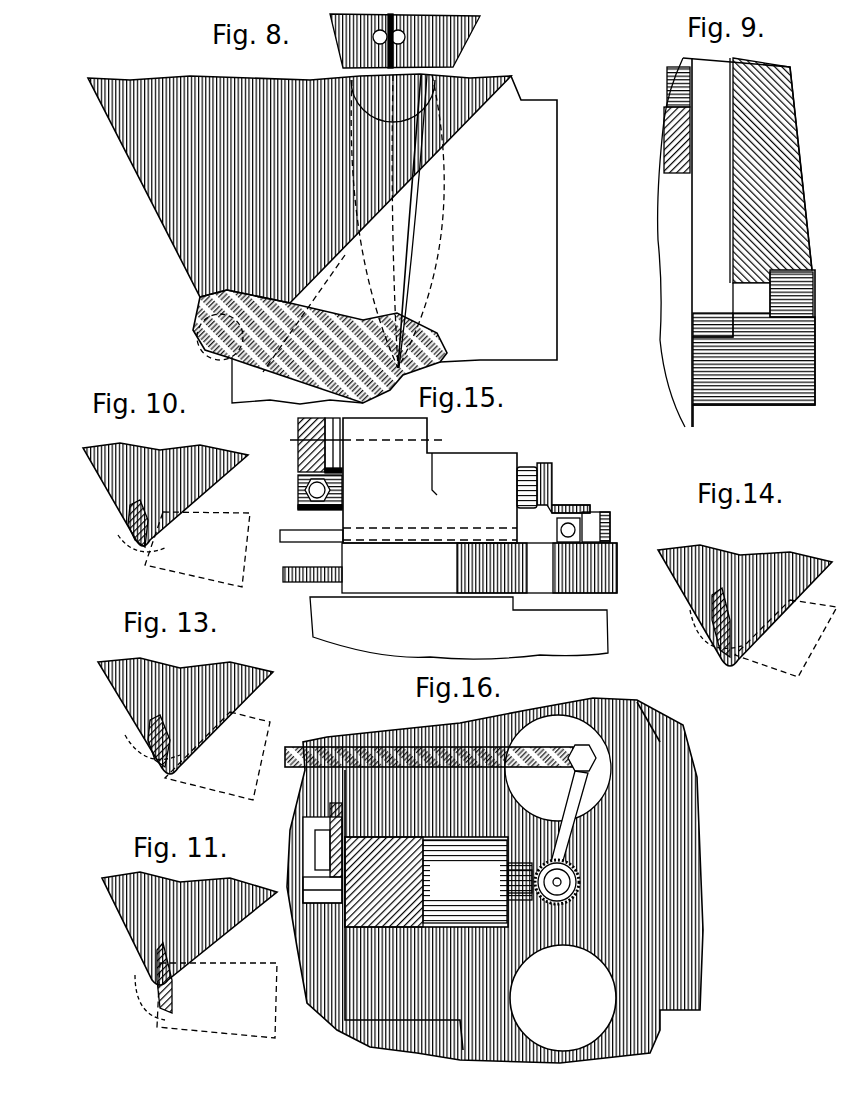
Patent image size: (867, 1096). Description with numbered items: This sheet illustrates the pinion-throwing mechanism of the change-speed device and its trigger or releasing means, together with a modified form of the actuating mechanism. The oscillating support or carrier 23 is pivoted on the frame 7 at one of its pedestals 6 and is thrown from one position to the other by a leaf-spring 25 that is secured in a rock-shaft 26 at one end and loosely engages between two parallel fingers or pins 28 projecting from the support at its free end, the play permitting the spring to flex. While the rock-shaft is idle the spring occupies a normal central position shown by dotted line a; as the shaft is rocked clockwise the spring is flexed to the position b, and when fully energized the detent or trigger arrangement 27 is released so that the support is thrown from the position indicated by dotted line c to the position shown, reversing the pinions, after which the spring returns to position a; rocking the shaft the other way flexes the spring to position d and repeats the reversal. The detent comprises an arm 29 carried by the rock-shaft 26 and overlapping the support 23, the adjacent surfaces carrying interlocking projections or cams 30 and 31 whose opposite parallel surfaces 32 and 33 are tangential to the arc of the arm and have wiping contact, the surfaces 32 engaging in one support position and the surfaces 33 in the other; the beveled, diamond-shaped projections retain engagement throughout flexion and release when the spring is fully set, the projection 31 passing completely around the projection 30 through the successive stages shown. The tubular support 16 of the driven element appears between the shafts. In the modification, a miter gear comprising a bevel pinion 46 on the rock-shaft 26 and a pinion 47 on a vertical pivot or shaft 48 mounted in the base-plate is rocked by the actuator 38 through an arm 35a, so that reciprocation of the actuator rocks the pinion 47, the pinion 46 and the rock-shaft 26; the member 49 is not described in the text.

In FIG. 15, the pedestal 6 is at (430, 480).
In FIG. 16, the pedestal 6 is at (438, 882).
In FIG. 15, the frame 7 is at (463, 601).
In FIG. 16, the frame 7 is at (693, 877).
In FIG. 15, the tubular support 16 is at (363, 442).
In FIG. 8, the oscillating support 23 is at (512, 76).
In FIG. 9, the oscillating support 23 is at (705, 268).
In FIG. 10, the oscillating support 23 is at (205, 470).
In FIG. 13, the oscillating support 23 is at (245, 688).
In FIG. 11, the oscillating support 23 is at (207, 895).
In FIG. 15, the oscillating support 23 is at (343, 458).
In FIG. 14, the oscillating support 23 is at (738, 567).
In FIG. 16, the oscillating support 23 is at (330, 810).
In FIG. 8, the leaf-spring 25 is at (428, 200).
In FIG. 15, the leaf-spring 25 is at (298, 424).
In FIG. 16, the leaf-spring 25 is at (304, 900).
In FIG. 15, the rock-shaft 26 is at (530, 467).
In FIG. 16, the rock-shaft 26 is at (530, 900).
In FIG. 10, the detent or trigger arrangement 27 is at (128, 530).
In FIG. 13, the detent or trigger arrangement 27 is at (172, 772).
In FIG. 11, the detent or trigger arrangement 27 is at (175, 968).
In FIG. 14, the detent or trigger arrangement 27 is at (730, 660).
In FIG. 8, the parallel fingers or pins 28 is at (430, 40).
In FIG. 8, the arm 29 is at (320, 346).
In FIG. 9, the arm 29 is at (800, 303).
In FIG. 10, the arm 29 is at (235, 556).
In FIG. 13, the arm 29 is at (217, 756).
In FIG. 11, the arm 29 is at (217, 1000).
In FIG. 14, the arm 29 is at (786, 638).
In FIG. 16, the arm 29 is at (305, 823).
In FIG. 8, the projection or cam on support 30 is at (205, 327).
In FIG. 9, the projection or cam on support 30 is at (751, 298).
In FIG. 10, the projection or cam on support 30 is at (130, 520).
In FIG. 13, the projection or cam on support 30 is at (158, 762).
In FIG. 11, the projection or cam on support 30 is at (158, 960).
In FIG. 14, the projection or cam on support 30 is at (722, 640).
In FIG. 8, the projection or cam on arm 31 is at (224, 350).
In FIG. 9, the projection or cam on arm 31 is at (748, 283).
In FIG. 10, the projection or cam on arm 31 is at (140, 545).
In FIG. 13, the projection or cam on arm 31 is at (150, 745).
In FIG. 11, the projection or cam on arm 31 is at (163, 1013).
In FIG. 14, the projection or cam on arm 31 is at (713, 615).
In FIG. 16, the projection or cam on arm 31 is at (316, 843).
In FIG. 10, the engaging surfaces 32 is at (130, 540).
In FIG. 13, the engaging surfaces 32 is at (150, 728).
In FIG. 11, the engaging surfaces 32 is at (172, 960).
In FIG. 14, the engaging surfaces 32 is at (712, 608).
In FIG. 10, the engaging surfaces 33 is at (138, 508).
In FIG. 13, the engaging surfaces 33 is at (150, 755).
In FIG. 11, the engaging surfaces 33 is at (155, 970).
In FIG. 14, the engaging surfaces 33 is at (715, 640).
In FIG. 15, the arm 35a is at (600, 514).
In FIG. 16, the arm 35a is at (566, 785).
In FIG. 16, the actuator 38 is at (548, 748).
In FIG. 15, the bevel pinion 46 is at (553, 480).
In FIG. 16, the bevel pinion 46 is at (557, 870).
In FIG. 15, the pinion 47 is at (575, 504).
In FIG. 16, the pinion 47 is at (580, 883).
In FIG. 15, the vertical pivot or shaft 48 is at (562, 538).
In FIG. 16, the vertical pivot or shaft 48 is at (565, 877).
In FIG. 15, the rod 49 is at (330, 541).
In FIG. 8, the normal spring position a is at (394, 236).
In FIG. 8, the flexed spring position b is at (446, 244).
In FIG. 8, the previous support position c is at (322, 294).
In FIG. 8, the reverse flexed spring position d is at (355, 264).